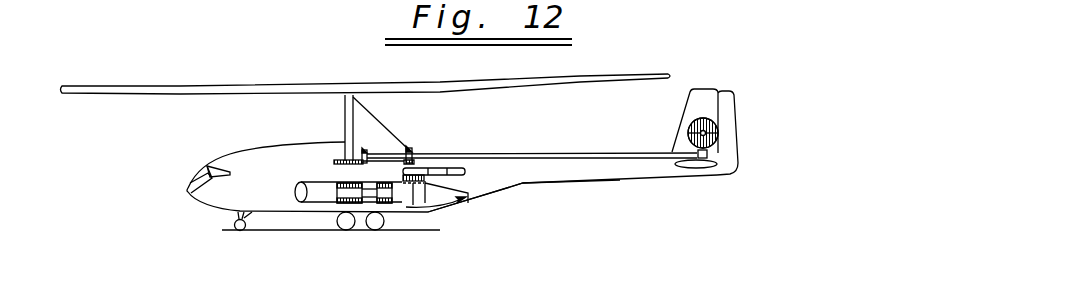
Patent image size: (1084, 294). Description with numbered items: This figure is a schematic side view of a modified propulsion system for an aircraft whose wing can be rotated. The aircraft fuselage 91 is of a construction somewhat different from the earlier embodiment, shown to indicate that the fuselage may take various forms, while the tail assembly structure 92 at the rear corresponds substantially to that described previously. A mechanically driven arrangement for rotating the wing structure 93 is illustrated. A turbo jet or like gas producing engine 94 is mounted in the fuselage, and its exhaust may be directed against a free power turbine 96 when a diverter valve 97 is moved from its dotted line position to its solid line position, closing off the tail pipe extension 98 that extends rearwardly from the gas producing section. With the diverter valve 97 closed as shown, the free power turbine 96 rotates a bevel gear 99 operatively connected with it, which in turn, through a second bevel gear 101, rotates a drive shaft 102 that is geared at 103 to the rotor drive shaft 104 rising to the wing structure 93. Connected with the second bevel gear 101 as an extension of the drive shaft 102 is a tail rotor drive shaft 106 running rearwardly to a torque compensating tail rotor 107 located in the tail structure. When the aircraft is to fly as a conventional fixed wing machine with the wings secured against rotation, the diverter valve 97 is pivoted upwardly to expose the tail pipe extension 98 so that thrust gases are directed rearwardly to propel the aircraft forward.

The aircraft fuselage 91 is at (521, 176).
The tail assembly structure 92 is at (718, 176).
The wing structure 93 is at (265, 93).
The gas producing engine 94 is at (347, 202).
The free power turbine 96 is at (412, 184).
The diverter valve 97 is at (415, 195).
The tail pipe extension 98 is at (465, 201).
The bevel gear 99 is at (466, 172).
The second bevel gear 101 is at (413, 153).
The drive shaft 102 is at (378, 157).
The gearing 103 is at (360, 164).
The rotor drive shaft 104 is at (348, 122).
The tail rotor drive shaft 106 is at (532, 157).
The torque compensating tail rotor 107 is at (699, 118).